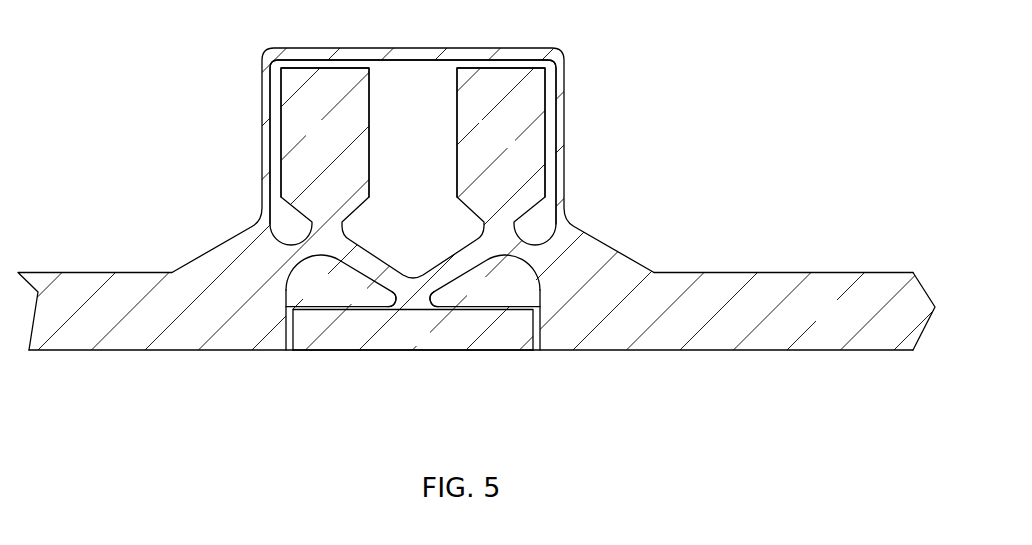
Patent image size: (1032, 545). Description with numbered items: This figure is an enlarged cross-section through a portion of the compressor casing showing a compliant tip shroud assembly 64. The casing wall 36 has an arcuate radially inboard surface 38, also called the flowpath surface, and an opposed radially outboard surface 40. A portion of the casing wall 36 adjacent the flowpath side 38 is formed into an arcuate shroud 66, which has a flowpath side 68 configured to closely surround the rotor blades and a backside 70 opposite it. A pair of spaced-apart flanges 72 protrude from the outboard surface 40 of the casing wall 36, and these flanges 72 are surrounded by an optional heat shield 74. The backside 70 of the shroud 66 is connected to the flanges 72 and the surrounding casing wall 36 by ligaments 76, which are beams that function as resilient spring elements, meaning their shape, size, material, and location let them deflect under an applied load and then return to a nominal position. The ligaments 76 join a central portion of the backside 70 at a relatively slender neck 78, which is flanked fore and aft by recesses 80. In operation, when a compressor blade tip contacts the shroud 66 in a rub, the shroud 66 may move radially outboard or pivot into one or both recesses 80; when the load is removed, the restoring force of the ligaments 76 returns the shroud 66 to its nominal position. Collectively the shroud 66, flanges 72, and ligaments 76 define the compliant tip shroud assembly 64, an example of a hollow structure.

The casing wall 36 is at (818, 326).
The radially inboard surface 38 is at (750, 356).
The radially outboard surface 40 is at (778, 268).
The compliant tip shroud assembly 64 is at (620, 50).
The arcuate shroud 66 is at (396, 344).
The flowpath side 68 is at (505, 358).
The backside 70 is at (448, 298).
The flanges 72 is at (308, 146).
The heat shield 74 is at (262, 96).
The ligaments 76 is at (460, 256).
The neck 78 is at (398, 298).
The recesses 80 is at (294, 297).